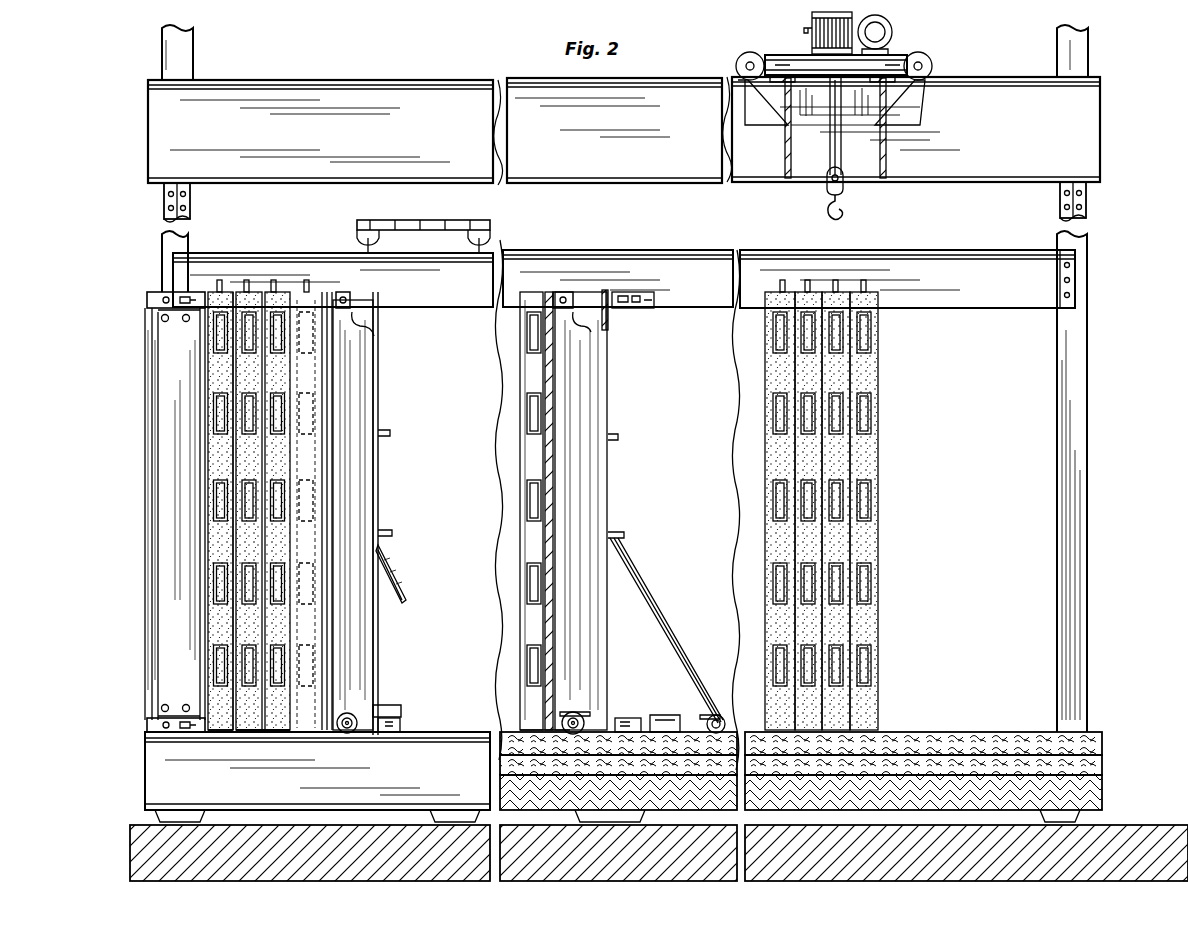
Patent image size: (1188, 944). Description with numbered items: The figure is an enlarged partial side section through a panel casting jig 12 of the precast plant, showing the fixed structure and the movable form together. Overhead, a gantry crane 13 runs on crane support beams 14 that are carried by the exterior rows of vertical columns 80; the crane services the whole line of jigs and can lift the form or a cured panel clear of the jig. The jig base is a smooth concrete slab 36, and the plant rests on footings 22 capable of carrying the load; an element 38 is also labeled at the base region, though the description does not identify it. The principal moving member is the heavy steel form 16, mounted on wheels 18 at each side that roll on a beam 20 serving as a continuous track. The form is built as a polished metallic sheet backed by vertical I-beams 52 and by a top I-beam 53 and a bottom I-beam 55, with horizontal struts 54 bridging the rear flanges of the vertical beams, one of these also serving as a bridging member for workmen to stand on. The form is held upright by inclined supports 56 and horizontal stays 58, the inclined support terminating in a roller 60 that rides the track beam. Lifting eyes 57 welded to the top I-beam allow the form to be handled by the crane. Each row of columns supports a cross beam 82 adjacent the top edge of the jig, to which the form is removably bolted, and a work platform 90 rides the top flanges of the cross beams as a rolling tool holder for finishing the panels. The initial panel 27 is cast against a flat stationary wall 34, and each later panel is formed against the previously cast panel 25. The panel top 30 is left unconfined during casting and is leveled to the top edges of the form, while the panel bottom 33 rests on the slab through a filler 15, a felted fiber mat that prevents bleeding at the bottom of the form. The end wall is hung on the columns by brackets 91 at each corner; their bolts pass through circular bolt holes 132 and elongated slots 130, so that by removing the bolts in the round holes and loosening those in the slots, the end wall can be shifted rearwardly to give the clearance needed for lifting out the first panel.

The panel casting jig 12 is at (397, 572).
The gantry crane 13 is at (844, 192).
The crane support beams 14 is at (385, 88).
The filler 15 is at (242, 730).
The form 16 is at (368, 376).
The wheels 18 is at (348, 732).
The beam 20 is at (165, 787).
The footings 22 is at (364, 838).
The previously cast panel 25 is at (277, 551).
The initial panel 27 is at (224, 536).
The panel top 30 is at (246, 292).
The panel bottom 33 is at (287, 730).
The stationary wall 34 is at (152, 466).
The concrete slab 36 is at (972, 742).
The ground fill 38 is at (1082, 784).
The vertical I-beams 52 is at (378, 470).
The top I-beam 53 is at (371, 324).
The horizontal struts 54 is at (384, 434).
The bottom I-beam 55 is at (376, 706).
The inclined supports 56 is at (400, 590).
The lifting eyes 57 is at (344, 292).
The horizontal stays 58 is at (405, 712).
The roller 60 is at (745, 698).
The vertical columns 80 is at (162, 248).
The cross beam 82 is at (690, 240).
The work platform 90 is at (425, 220).
The bracket 91 is at (148, 300).
The elongated slots 130 is at (184, 319).
The circular bolt holes 132 is at (163, 318).